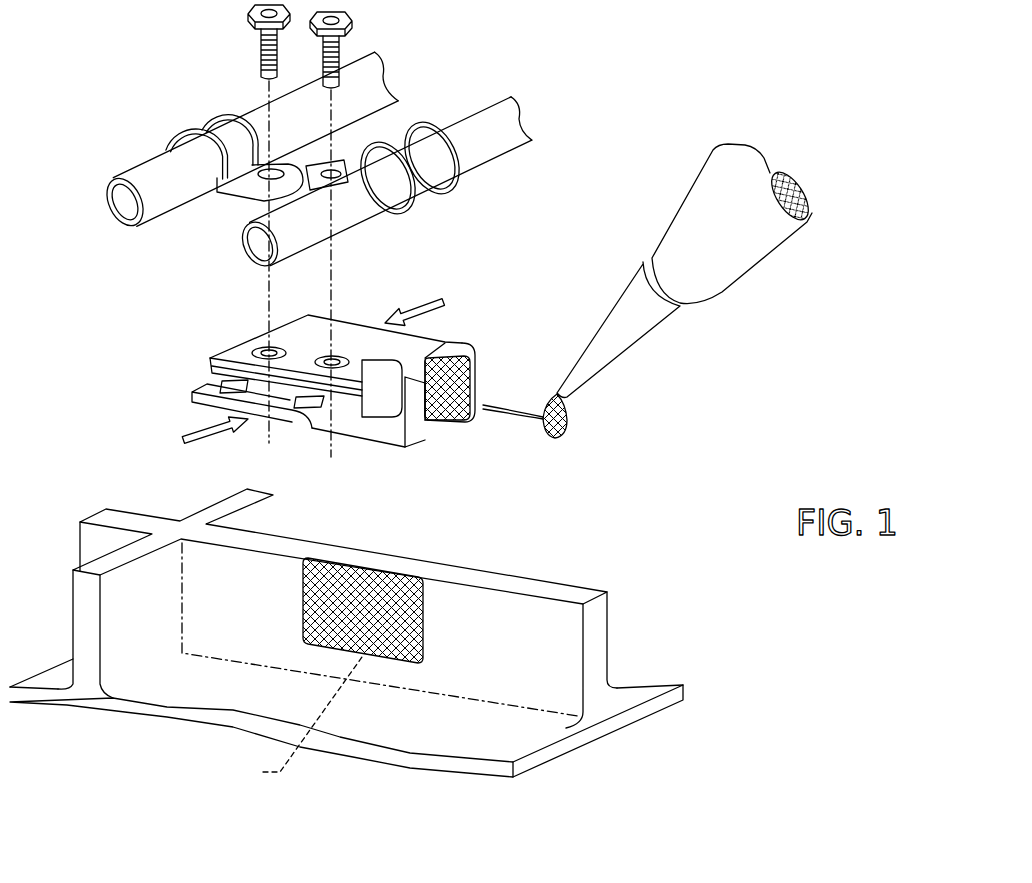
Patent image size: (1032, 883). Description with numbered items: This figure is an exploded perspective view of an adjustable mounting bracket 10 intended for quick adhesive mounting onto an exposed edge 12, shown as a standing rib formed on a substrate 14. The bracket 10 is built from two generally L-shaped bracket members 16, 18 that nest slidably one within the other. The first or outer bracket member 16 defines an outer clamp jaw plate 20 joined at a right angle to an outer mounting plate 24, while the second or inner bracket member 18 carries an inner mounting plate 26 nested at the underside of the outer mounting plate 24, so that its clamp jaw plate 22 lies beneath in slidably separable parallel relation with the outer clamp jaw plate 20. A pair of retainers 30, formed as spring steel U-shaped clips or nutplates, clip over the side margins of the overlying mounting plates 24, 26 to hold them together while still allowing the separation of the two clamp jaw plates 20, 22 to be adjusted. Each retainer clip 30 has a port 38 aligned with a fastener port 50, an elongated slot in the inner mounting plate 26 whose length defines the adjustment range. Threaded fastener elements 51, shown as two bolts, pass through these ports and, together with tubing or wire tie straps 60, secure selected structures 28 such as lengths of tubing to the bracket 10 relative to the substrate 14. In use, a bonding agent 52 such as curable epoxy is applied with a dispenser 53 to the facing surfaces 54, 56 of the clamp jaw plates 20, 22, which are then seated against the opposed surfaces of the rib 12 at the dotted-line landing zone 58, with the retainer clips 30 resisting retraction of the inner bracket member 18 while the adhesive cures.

The adjustable mounting bracket 10 is at (522, 283).
The exposed edge 12 is at (583, 600).
The substrate 14 is at (650, 685).
The first or outer bracket member 16 is at (364, 315).
The second or inner bracket member 18 is at (414, 455).
The clamp jaw plate 20 is at (481, 372).
The clamp jaw plate 22 is at (380, 437).
The mounting plate 24 is at (310, 322).
The mounting plate 26 is at (195, 391).
The selected structures 28 is at (158, 172).
The retainer 30 is at (228, 339).
The port 38 is at (352, 357).
The fastener port 50 is at (210, 373).
The fastener element 51 is at (260, 53).
The bonding agent 52 is at (555, 438).
The dispenser 53 is at (740, 282).
The facing surface 54 is at (472, 376).
The facing surface 56 is at (440, 350).
The landing zone 58 is at (292, 721).
The tie straps 60 is at (205, 130).